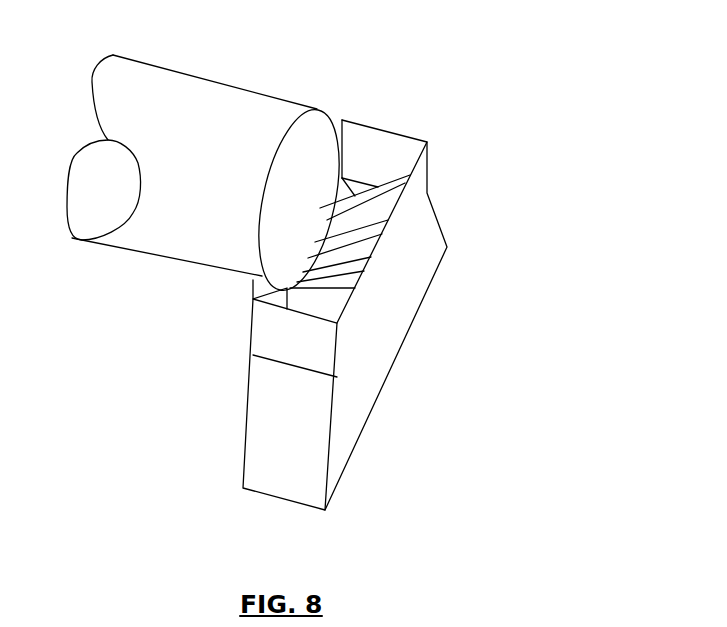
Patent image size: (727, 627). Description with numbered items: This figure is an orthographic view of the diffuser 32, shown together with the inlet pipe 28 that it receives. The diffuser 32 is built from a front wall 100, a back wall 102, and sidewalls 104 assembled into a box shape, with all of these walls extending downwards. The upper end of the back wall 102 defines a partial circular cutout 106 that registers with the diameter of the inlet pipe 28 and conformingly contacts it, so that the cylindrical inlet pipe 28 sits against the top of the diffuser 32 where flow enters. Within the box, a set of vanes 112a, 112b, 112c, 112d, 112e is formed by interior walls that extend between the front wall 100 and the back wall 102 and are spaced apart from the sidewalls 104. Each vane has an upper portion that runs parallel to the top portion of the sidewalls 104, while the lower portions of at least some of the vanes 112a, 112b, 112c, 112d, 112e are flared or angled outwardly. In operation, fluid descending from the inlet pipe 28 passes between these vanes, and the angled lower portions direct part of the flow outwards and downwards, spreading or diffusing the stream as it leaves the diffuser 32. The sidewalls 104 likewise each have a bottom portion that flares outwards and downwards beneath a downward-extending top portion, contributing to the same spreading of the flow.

The inlet pipe 28 is at (173, 97).
The diffuser 32 is at (535, 133).
The front wall 100 is at (422, 187).
The back wall 102 is at (262, 296).
The sidewalls 104 is at (358, 143).
The partial circular cutout 106 is at (328, 182).
The vane 112a is at (337, 308).
The vane 112b is at (343, 277).
The vane 112c is at (377, 247).
The vane 112d is at (377, 223).
The vane 112e is at (380, 193).